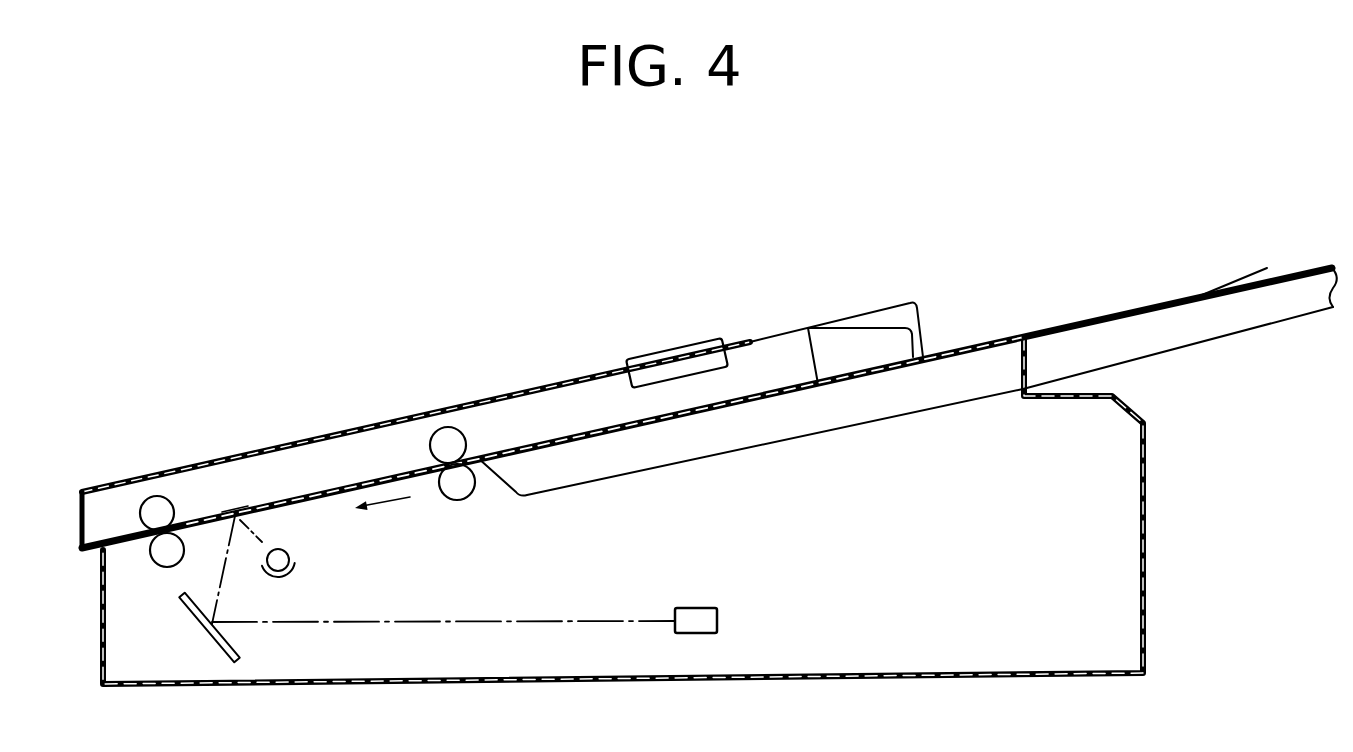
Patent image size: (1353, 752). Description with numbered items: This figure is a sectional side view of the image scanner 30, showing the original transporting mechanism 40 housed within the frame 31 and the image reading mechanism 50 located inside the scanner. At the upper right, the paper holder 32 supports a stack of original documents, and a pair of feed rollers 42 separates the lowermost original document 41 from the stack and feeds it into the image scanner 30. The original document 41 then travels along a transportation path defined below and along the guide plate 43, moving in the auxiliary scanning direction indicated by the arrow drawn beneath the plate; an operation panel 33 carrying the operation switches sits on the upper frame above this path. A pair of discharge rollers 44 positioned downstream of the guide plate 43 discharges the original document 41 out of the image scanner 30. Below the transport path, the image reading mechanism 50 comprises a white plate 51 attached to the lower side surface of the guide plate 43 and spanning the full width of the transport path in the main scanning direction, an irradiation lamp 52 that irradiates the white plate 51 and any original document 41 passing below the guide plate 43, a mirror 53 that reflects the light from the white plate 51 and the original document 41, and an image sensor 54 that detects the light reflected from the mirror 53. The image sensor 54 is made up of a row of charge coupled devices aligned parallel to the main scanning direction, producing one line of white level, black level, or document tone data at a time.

The image scanner 30 is at (352, 206).
The frame 31 is at (1146, 482).
The paper holder 32 is at (1291, 276).
The operation panel 33 is at (676, 348).
The original transporting mechanism 40 is at (316, 460).
The original document 41 is at (1238, 278).
The feed rollers 42 is at (469, 448).
The guide plate 43 is at (373, 477).
The discharge rollers 44 is at (148, 552).
The image reading mechanism 50 is at (586, 575).
The white plate 51 is at (281, 511).
The irradiation lamp 52 is at (295, 565).
The mirror 53 is at (197, 630).
The image sensor 54 is at (694, 607).